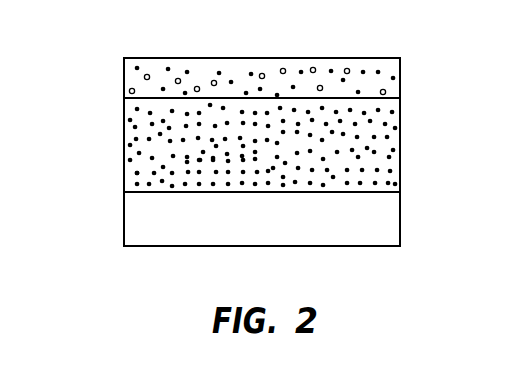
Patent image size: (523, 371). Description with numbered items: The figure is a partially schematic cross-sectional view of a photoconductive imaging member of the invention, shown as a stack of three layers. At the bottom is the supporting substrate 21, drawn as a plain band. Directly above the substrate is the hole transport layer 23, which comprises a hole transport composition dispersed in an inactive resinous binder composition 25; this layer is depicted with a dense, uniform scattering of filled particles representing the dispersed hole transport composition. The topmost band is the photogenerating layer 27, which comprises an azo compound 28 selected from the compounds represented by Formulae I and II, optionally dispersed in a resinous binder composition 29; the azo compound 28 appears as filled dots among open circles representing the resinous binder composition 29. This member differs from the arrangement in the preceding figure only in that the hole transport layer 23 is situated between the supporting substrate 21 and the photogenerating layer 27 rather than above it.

The supporting substrate 21 is at (400, 228).
The hole transport layer 23 is at (400, 170).
The inactive resinous binder composition 25 is at (136, 172).
The photogenerating layer 27 is at (400, 80).
The azo compound 28 is at (136, 68).
The resinous binder composition 29 is at (347, 68).